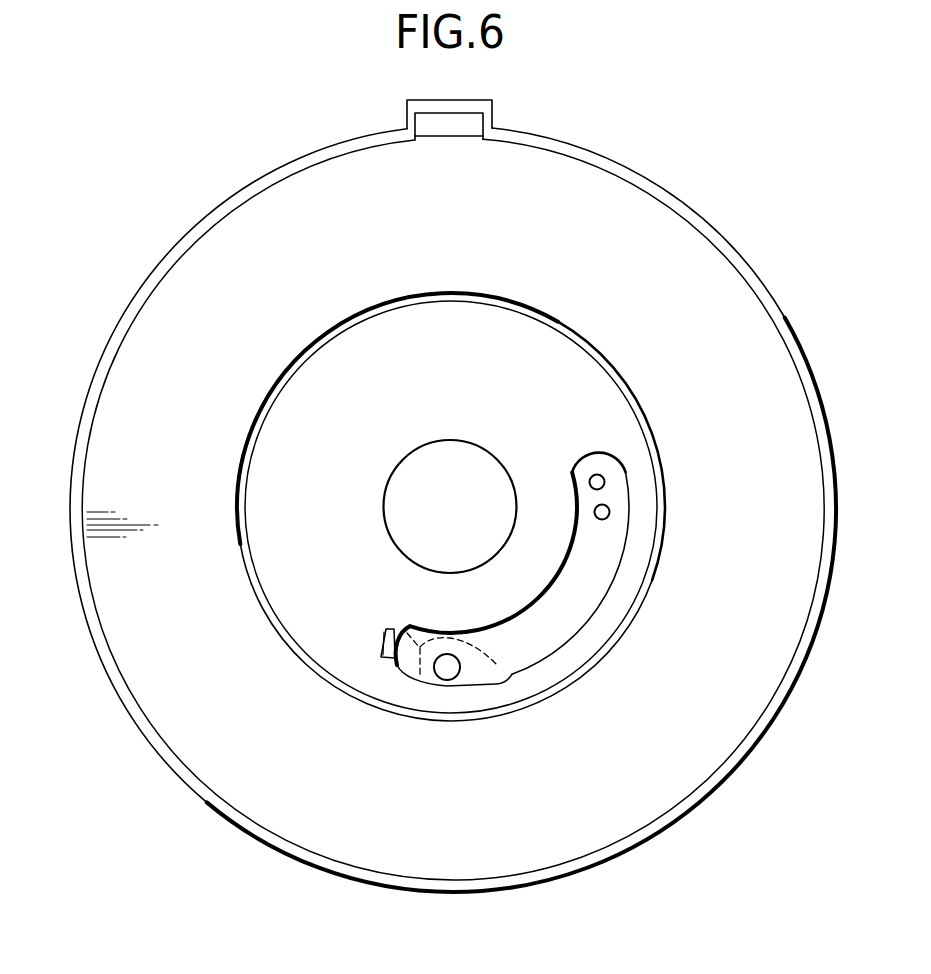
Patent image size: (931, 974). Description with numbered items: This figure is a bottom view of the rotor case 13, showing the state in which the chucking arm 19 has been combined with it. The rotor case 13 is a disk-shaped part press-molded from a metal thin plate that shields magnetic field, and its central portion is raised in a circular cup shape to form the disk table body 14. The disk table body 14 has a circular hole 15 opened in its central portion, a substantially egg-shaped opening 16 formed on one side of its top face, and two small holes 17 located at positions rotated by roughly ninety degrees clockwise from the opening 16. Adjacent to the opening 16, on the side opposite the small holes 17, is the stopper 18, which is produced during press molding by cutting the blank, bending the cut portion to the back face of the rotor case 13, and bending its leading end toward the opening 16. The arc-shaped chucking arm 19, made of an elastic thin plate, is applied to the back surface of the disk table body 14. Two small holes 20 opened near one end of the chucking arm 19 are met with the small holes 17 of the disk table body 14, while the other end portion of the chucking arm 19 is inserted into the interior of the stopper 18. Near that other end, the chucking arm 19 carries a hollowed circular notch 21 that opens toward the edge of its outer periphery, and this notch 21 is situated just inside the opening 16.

The rotor case 13 is at (742, 231).
The disk table body 14 is at (594, 345).
The circular hole 15 is at (444, 440).
The opening 16 is at (407, 625).
The small holes 17 is at (590, 478).
The stopper 18 is at (381, 655).
The chucking arm 19 is at (553, 665).
The small holes 20 is at (597, 508).
The notch 21 is at (452, 655).